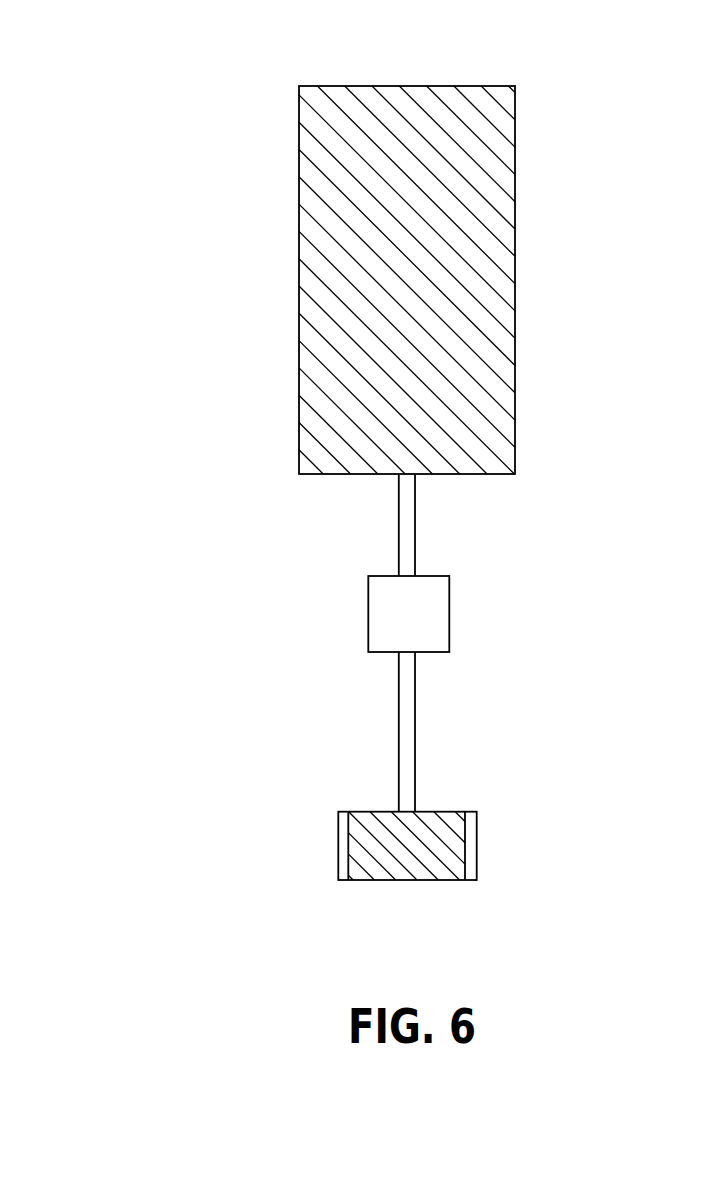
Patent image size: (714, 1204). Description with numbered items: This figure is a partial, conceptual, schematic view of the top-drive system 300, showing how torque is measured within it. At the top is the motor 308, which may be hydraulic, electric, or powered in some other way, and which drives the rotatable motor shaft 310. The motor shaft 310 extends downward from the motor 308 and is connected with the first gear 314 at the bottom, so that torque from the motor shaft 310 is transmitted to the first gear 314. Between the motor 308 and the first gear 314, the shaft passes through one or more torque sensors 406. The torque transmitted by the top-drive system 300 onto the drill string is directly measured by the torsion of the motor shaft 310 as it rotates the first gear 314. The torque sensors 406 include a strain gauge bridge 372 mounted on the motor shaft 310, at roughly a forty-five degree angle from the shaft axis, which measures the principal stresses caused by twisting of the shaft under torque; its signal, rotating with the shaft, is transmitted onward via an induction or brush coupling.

The top-drive system 300 is at (132, 120).
The motor 308 is at (486, 193).
The motor shaft 310 is at (402, 504).
The torque sensor 406 is at (452, 632).
The strain gauge bridge 372 is at (394, 617).
The first gear 314 is at (338, 849).